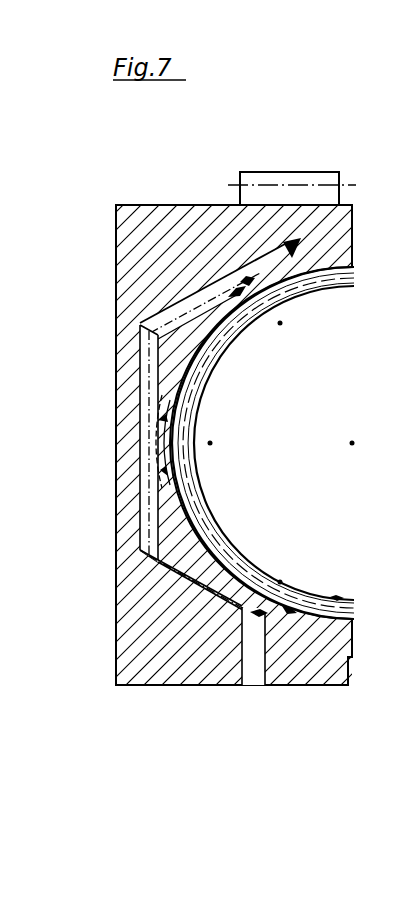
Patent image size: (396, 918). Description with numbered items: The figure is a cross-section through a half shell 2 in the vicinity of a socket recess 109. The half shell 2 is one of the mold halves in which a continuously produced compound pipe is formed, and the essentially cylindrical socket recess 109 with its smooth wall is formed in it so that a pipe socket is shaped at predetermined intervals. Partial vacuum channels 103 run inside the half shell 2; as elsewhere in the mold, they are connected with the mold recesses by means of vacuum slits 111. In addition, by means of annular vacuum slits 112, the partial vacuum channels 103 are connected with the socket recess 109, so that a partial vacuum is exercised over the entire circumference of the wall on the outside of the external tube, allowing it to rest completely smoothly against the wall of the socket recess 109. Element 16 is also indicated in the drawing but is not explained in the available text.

The half shell 2 is at (169, 265).
The axis boss 16 is at (282, 178).
The annular vacuum slits 112 is at (280, 337).
The partial vacuum channels 103 is at (195, 691).
The vacuum slits 111 is at (246, 719).
The socket recess 109 is at (271, 557).